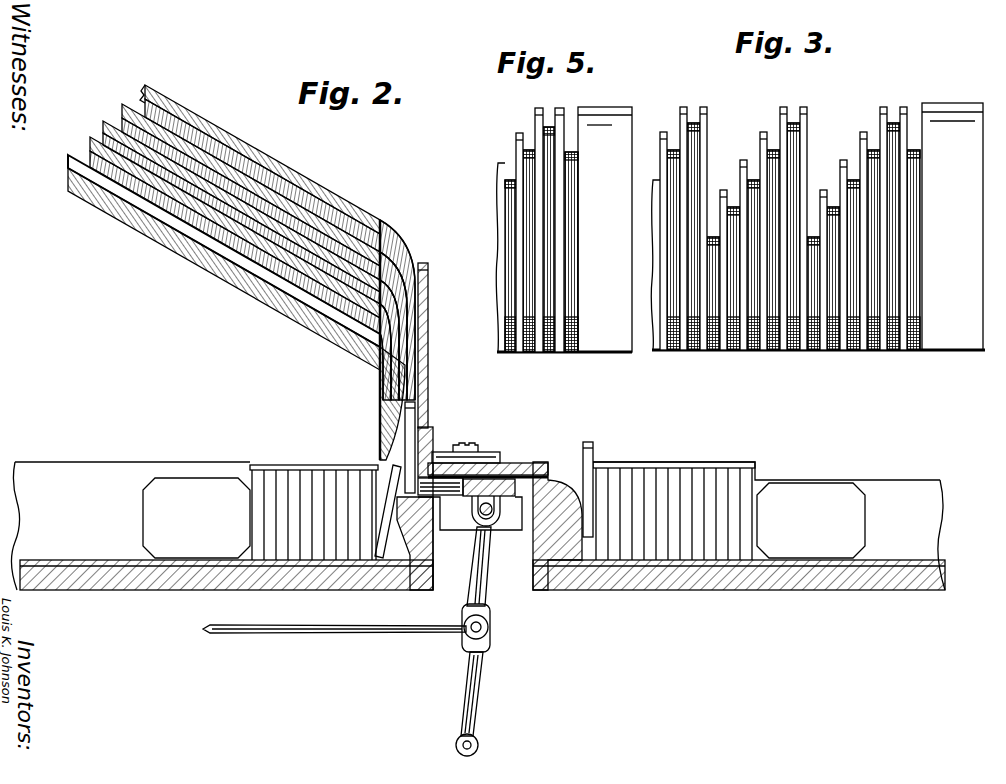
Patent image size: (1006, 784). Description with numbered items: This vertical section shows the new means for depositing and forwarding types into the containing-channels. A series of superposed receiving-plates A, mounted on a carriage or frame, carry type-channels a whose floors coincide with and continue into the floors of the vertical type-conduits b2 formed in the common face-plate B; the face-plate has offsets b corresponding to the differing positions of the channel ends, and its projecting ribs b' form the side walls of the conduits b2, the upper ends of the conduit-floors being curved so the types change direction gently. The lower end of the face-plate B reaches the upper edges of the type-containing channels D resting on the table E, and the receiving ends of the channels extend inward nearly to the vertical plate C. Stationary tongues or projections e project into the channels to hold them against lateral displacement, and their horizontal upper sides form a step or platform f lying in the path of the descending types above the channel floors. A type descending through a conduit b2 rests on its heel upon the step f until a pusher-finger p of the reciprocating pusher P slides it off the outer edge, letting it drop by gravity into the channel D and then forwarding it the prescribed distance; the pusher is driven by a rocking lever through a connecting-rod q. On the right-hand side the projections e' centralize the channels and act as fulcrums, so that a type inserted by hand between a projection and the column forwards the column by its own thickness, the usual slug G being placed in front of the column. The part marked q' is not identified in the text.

In FIG. 2, the receiving-plates A is at (262, 160).
In FIG. 2, the face-plate B is at (408, 243).
In FIG. 5, the face-plate B is at (571, 256).
In FIG. 3, the face-plate B is at (914, 218).
In FIG. 2, the offsets b is at (252, 252).
In FIG. 5, the offsets b is at (536, 256).
In FIG. 3, the offsets b is at (788, 237).
In FIG. 5, the projecting ribs b' is at (540, 230).
In FIG. 3, the projecting ribs b' is at (783, 239).
In FIG. 2, the type-conduits b2 is at (406, 431).
In FIG. 5, the type-conduits b2 is at (509, 356).
In FIG. 3, the type-conduits b2 is at (795, 108).
In FIG. 2, the type-channels a is at (236, 307).
In FIG. 2, the vertical plate C is at (429, 324).
In FIG. 2, the type-containing channels D is at (478, 516).
In FIG. 2, the table E is at (190, 592).
In FIG. 2, the slug G is at (504, 518).
In FIG. 2, the reciprocating pusher P is at (500, 478).
In FIG. 2, the pusher-fingers p is at (455, 503).
In FIG. 2, the stationary tongues or projections e is at (415, 543).
In FIG. 2, the stationary tongues or projections (right-hand side) e' is at (557, 526).
In FIG. 2, the step or platform f is at (392, 472).
In FIG. 2, the connecting-rod q is at (478, 626).
In FIG. 2, the connecting rod q' is at (334, 636).